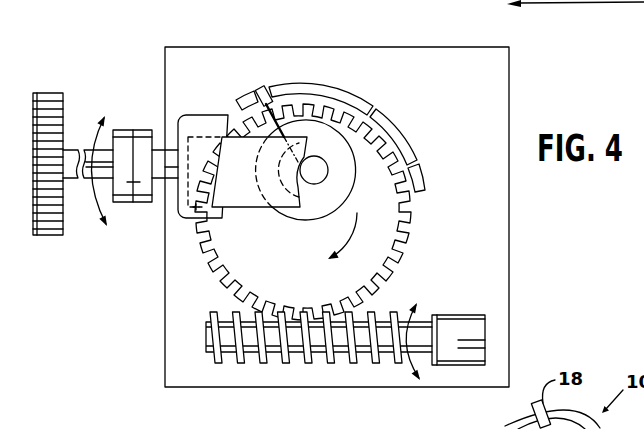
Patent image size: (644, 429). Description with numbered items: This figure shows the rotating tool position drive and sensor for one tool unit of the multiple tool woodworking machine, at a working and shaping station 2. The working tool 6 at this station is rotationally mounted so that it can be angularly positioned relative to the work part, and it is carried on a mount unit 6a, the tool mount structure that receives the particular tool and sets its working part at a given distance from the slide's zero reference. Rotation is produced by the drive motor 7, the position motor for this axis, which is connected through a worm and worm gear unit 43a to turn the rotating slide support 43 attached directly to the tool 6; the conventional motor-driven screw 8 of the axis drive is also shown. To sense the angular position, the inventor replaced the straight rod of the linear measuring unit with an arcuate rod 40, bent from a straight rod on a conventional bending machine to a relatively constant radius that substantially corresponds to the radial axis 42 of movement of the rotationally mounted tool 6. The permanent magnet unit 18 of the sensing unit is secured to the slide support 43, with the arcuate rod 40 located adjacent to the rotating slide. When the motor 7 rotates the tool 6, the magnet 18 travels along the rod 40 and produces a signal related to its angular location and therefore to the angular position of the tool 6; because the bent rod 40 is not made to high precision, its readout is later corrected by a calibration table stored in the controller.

The working and shaping station 2 is at (207, 117).
The working tool 6 is at (48, 92).
The mount unit 6a is at (125, 203).
The drive motor 7 is at (458, 313).
The motor-driven screw 8 is at (488, 257).
The permanent magnet unit 18 is at (262, 86).
The arcuate rod 40 is at (343, 92).
The radial axis 42 is at (93, 138).
The slide support 43 is at (236, 208).
The worm and worm gear unit 43a is at (290, 366).